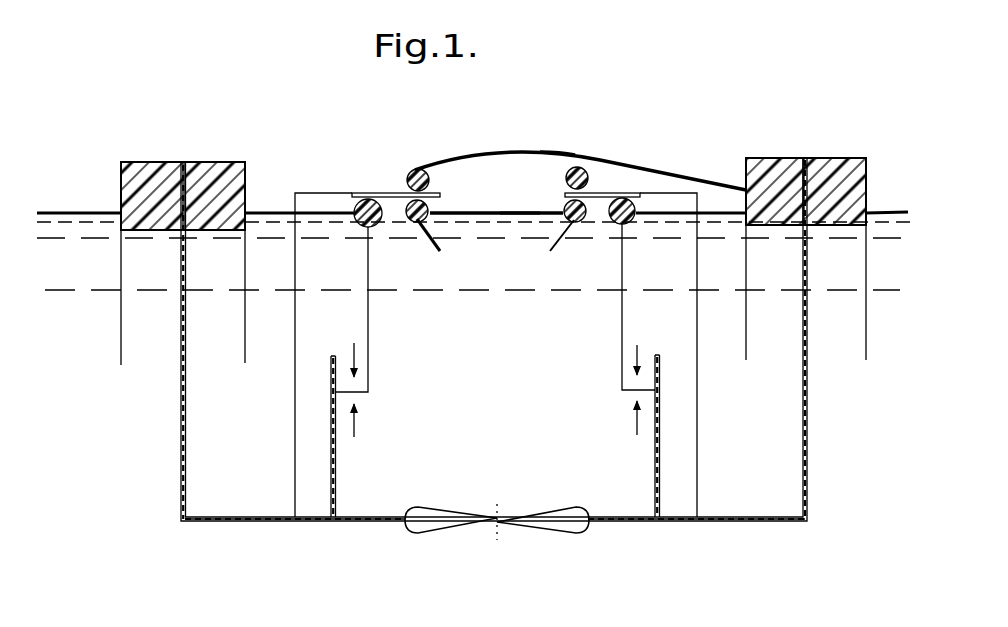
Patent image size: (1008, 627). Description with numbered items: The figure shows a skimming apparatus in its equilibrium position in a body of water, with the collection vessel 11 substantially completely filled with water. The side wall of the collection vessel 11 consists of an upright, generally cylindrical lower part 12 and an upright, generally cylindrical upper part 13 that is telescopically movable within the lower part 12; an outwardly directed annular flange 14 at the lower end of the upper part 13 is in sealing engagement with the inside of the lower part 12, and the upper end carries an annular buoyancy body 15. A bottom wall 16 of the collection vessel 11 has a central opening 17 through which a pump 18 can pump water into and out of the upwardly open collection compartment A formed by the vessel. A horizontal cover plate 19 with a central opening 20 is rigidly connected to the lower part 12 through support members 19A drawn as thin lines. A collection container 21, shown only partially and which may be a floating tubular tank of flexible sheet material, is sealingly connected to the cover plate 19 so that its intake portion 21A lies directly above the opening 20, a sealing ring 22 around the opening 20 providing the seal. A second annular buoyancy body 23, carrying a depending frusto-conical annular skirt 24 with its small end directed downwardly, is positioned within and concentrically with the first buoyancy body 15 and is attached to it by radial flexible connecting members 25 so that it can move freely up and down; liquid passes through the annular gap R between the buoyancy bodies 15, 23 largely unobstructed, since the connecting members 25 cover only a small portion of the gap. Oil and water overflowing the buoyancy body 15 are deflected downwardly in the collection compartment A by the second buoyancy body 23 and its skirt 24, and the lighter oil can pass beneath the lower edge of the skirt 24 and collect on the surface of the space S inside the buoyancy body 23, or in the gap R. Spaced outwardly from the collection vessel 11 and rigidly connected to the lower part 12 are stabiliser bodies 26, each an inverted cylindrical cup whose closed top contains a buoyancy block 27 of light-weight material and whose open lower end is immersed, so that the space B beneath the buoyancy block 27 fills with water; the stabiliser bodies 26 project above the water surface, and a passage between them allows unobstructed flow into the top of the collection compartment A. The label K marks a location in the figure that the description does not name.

The collection vessel 11 is at (327, 444).
The lower part 12 is at (332, 482).
The upper part 13 is at (371, 368).
The annular flange 14 is at (347, 387).
The annular buoyancy body 15 is at (345, 208).
The bottom wall 16 is at (362, 522).
The central opening 17 is at (406, 525).
The pump 18 is at (544, 522).
The cover plate 19 is at (403, 192).
The support members 19A is at (295, 438).
The central opening 20 is at (496, 193).
The collection container 21 is at (608, 151).
The intake portion 21A is at (538, 178).
The sealing ring 22 is at (434, 163).
The second annular buoyancy body 23 is at (587, 220).
The annular skirt 24 is at (583, 222).
The flexible connecting members 25 is at (389, 193).
The stabiliser bodies 26 is at (121, 197).
The buoyancy block 27 is at (203, 183).
The contact point K is at (369, 193).
The annular gap R is at (595, 195).
The space S is at (541, 200).
The collection compartment A is at (500, 433).
The space B is at (160, 287).